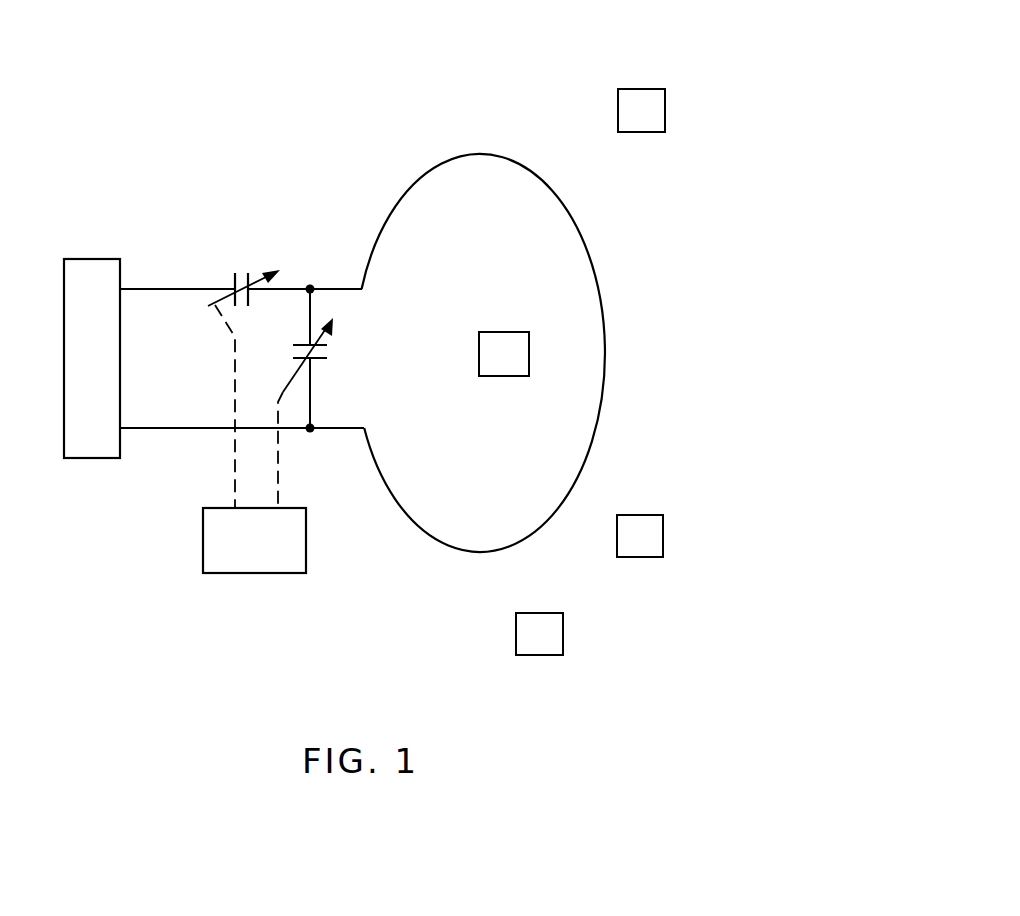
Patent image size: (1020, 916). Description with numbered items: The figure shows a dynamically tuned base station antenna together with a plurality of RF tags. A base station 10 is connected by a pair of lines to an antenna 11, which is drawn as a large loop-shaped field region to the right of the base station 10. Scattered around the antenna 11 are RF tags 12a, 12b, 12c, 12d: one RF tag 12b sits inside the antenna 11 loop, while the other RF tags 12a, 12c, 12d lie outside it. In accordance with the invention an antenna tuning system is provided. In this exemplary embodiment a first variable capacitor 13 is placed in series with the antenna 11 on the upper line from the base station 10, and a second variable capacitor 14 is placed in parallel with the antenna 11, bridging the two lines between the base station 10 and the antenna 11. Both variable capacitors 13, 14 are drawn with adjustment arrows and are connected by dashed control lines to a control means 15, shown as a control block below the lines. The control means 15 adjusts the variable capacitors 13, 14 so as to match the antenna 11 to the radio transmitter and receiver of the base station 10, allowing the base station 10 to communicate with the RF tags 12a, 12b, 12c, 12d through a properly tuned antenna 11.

The base station 10 is at (90, 258).
The antenna 11 is at (470, 152).
The RF tag 12a is at (642, 89).
The RF tag 12b is at (505, 332).
The RF tag 12c is at (645, 557).
The RF tag 12d is at (545, 655).
The variable capacitor 13 is at (242, 272).
The variable capacitor 14 is at (330, 350).
The control means 15 is at (248, 573).